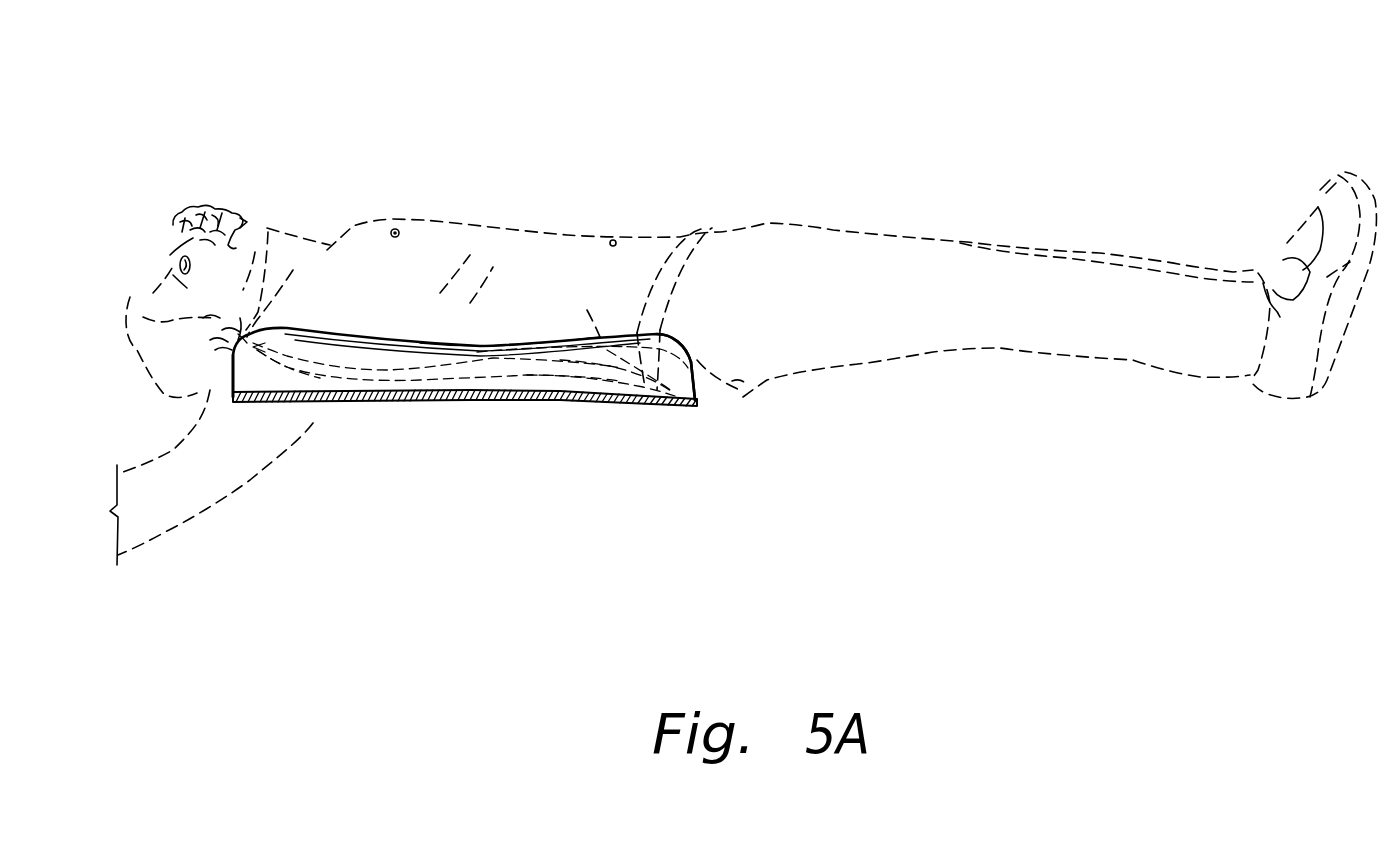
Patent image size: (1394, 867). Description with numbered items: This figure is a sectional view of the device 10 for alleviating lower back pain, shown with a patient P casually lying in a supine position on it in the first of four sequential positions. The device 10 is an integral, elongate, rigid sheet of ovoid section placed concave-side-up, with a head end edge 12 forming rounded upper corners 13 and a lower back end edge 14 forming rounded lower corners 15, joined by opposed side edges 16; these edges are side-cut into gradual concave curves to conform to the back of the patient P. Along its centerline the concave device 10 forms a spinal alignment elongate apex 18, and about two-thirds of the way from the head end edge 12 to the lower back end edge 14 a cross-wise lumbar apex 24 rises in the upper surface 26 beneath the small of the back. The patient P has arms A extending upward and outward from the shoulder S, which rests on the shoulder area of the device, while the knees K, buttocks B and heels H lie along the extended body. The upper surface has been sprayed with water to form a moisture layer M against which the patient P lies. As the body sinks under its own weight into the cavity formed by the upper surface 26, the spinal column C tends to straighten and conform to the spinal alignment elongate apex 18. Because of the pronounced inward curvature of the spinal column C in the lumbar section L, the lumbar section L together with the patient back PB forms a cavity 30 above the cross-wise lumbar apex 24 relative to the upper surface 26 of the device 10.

The device to alleviate lower back pain 10 is at (700, 115).
The head end edge 12 is at (233, 392).
The upper corners 13 is at (247, 343).
The lower back end edge 14 is at (700, 400).
The lower corners 15 is at (690, 344).
The side edges 16 is at (518, 343).
The spinal alignment elongate apex 18 is at (368, 402).
The cross-wise lumbar apex 24 is at (593, 388).
The upper surface 26 is at (290, 377).
The cavity 30 is at (588, 378).
The shoulder S is at (240, 432).
The arms A is at (197, 485).
The patient P is at (404, 287).
The knees K is at (998, 296).
The buttocks B is at (714, 350).
The spinal column C is at (347, 377).
The moisture layer M is at (427, 395).
The patient back PB is at (472, 397).
The lumbar section L is at (560, 392).
The heels H is at (1270, 393).